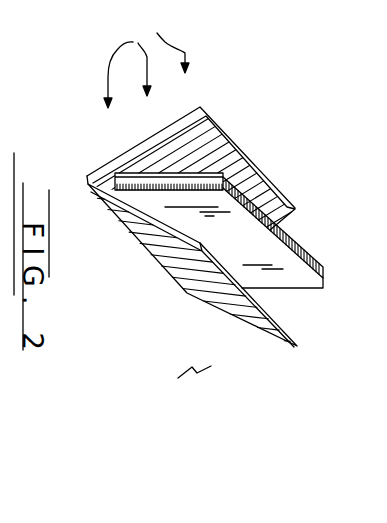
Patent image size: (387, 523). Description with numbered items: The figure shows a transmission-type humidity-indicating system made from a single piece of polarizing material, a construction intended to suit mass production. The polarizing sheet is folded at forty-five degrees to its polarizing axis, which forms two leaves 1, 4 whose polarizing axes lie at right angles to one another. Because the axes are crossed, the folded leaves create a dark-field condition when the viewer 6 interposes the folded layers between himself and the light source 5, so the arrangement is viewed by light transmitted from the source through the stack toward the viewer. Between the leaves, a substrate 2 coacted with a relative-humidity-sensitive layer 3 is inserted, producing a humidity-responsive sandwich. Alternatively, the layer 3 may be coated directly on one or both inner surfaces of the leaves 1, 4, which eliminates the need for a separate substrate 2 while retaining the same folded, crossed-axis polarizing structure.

The leaf 1 is at (295, 208).
The substrate 2 is at (323, 278).
The R.H.-sensitive layer 3 is at (323, 288).
The leaf 4 is at (297, 346).
The light source 5 is at (146, 62).
The viewer 6 is at (194, 369).